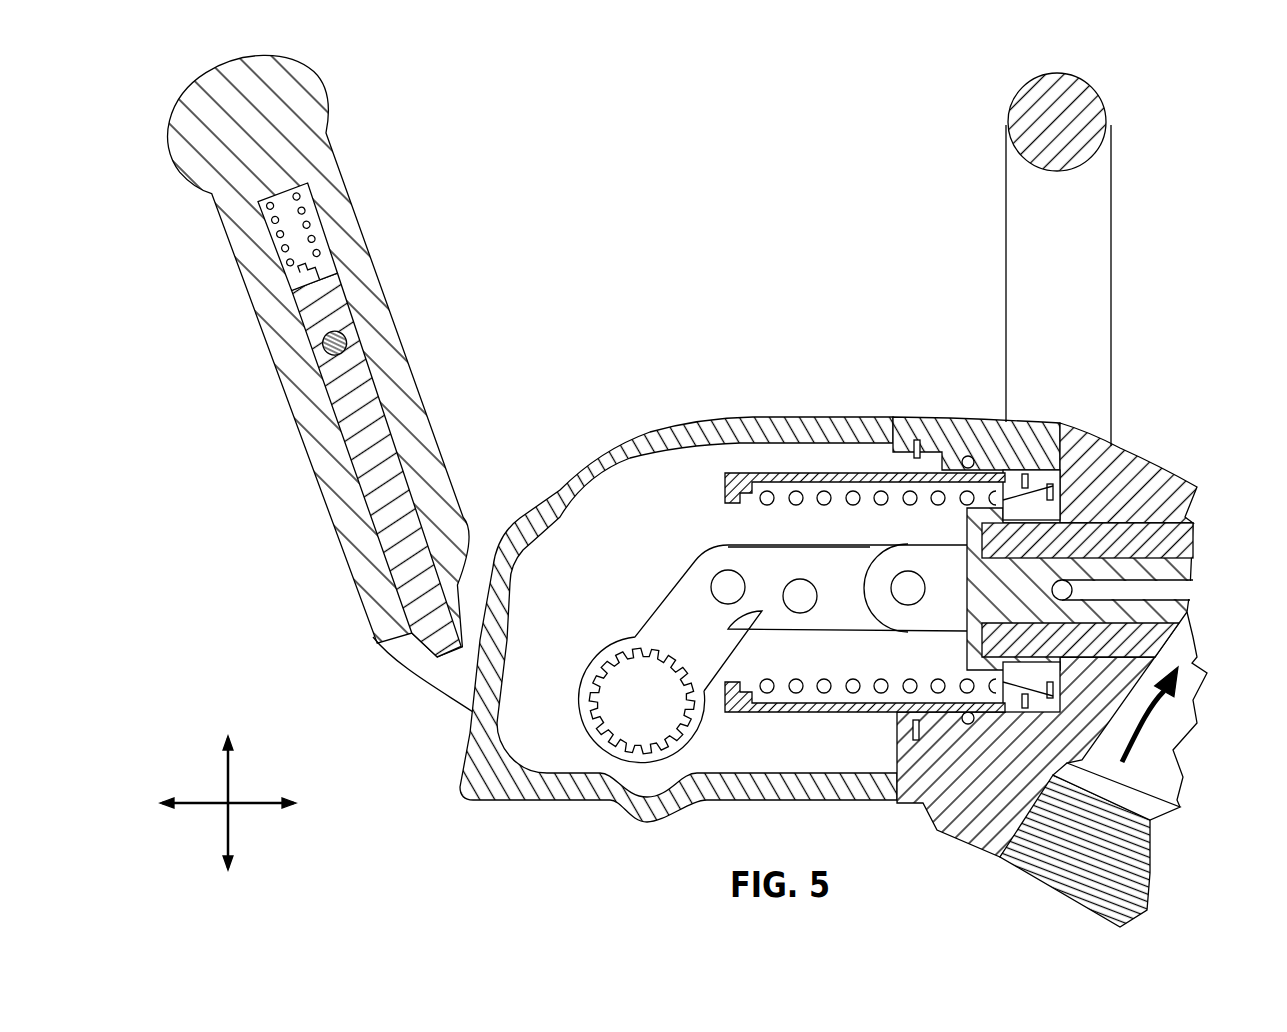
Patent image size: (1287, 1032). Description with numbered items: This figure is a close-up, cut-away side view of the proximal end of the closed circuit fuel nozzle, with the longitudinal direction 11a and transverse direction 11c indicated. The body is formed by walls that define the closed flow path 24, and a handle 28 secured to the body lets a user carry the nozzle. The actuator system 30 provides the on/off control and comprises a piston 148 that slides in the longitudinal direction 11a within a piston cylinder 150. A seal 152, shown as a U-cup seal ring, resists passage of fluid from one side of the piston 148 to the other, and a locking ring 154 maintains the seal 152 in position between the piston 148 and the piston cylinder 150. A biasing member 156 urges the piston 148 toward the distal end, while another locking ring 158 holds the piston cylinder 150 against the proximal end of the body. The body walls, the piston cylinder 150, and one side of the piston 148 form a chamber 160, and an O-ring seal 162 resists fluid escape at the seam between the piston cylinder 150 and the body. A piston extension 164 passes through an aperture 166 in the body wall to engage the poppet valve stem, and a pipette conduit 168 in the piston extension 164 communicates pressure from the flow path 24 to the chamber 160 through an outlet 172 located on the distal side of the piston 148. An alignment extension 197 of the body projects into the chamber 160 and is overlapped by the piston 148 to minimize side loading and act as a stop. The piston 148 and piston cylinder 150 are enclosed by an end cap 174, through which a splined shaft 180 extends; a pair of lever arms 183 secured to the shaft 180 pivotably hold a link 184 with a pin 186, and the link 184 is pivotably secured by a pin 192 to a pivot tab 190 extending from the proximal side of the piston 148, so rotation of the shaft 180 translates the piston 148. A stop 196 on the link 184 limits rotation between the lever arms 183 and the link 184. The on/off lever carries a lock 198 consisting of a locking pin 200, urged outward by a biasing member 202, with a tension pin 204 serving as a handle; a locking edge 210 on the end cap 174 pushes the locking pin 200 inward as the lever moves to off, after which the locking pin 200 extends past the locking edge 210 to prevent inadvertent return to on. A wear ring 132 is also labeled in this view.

The wear ring 132 is at (334, 359).
The lock 198 is at (365, 218).
The biasing member 202 is at (283, 250).
The tension pin 204 is at (328, 348).
The locking pin 200 is at (388, 426).
The actuator system 30 is at (700, 210).
The handle 28 is at (1100, 253).
The end cap 174 is at (604, 457).
The locking edge 210 is at (467, 792).
The chamber 160 is at (1052, 517).
The piston extension 164 is at (1118, 591).
The aperture 166 is at (1155, 553).
The pipette conduit 168 is at (1173, 575).
The outlet 172 is at (1067, 592).
The piston 148 is at (963, 637).
The alignment extension 197 is at (1003, 650).
The seal 152 is at (1008, 490).
The locking ring 154 is at (1053, 492).
The locking ring 158 is at (917, 448).
The O-ring seal 162 is at (968, 455).
The piston cylinder 150 is at (767, 477).
The biasing member 156 is at (825, 490).
The lever arms 183 is at (718, 640).
The link 184 is at (855, 583).
The pivot tab 190 is at (953, 573).
The pin 186 is at (712, 587).
The stop 196 is at (800, 605).
The pin 192 is at (903, 597).
The shaft 180 is at (635, 712).
The flow path 24 is at (1143, 727).
The transverse direction 11c is at (228, 768).
The longitudinal direction 11a is at (258, 806).